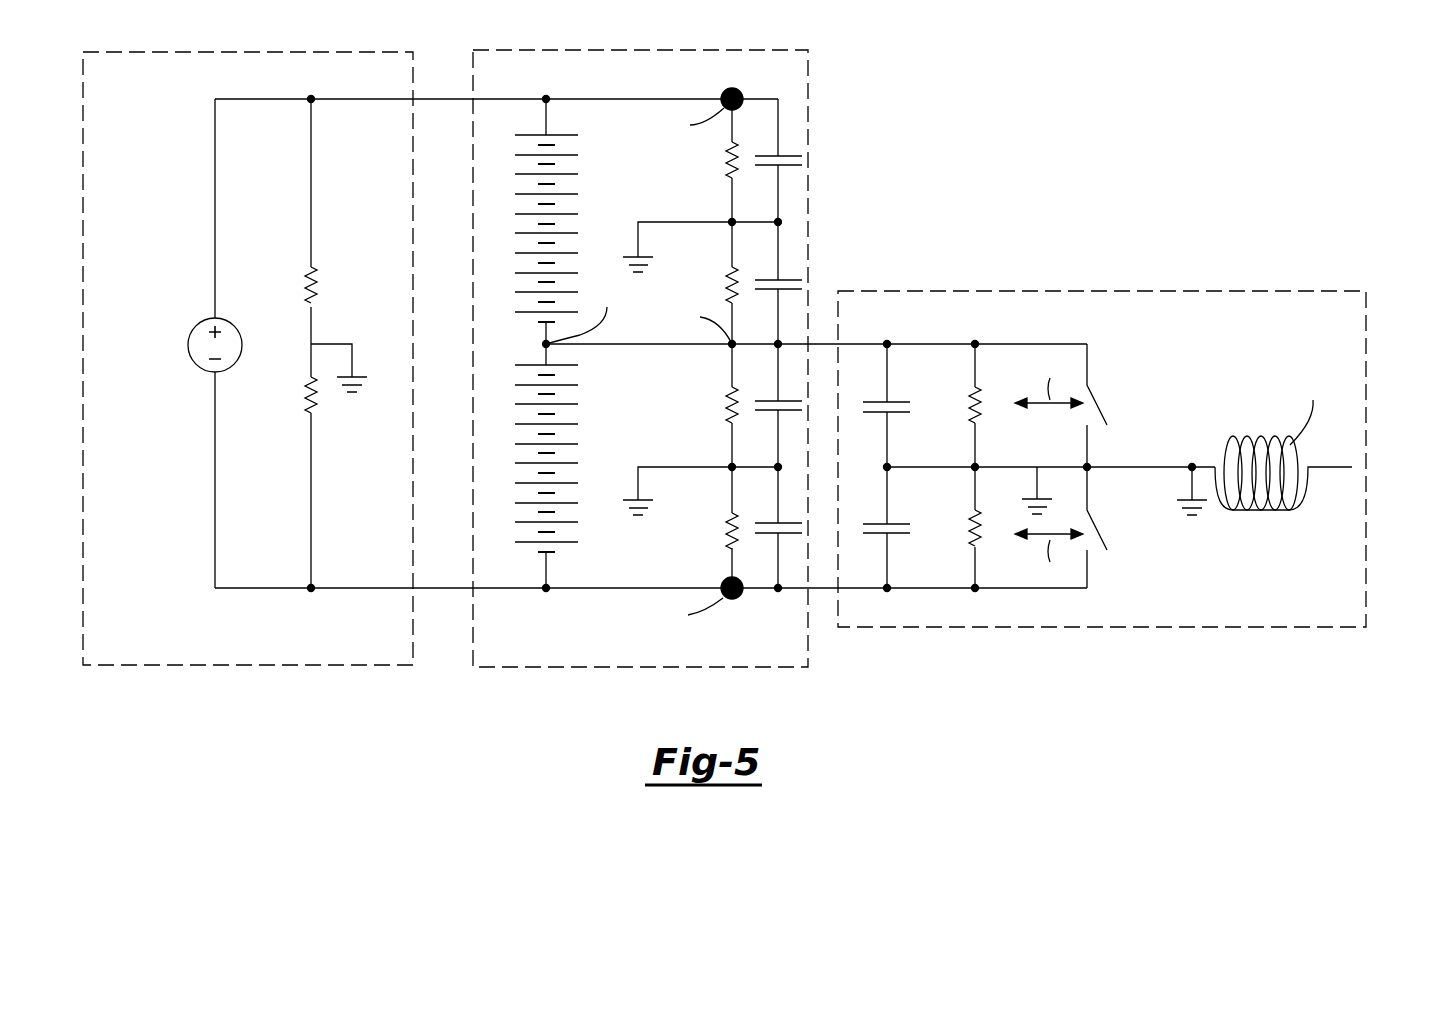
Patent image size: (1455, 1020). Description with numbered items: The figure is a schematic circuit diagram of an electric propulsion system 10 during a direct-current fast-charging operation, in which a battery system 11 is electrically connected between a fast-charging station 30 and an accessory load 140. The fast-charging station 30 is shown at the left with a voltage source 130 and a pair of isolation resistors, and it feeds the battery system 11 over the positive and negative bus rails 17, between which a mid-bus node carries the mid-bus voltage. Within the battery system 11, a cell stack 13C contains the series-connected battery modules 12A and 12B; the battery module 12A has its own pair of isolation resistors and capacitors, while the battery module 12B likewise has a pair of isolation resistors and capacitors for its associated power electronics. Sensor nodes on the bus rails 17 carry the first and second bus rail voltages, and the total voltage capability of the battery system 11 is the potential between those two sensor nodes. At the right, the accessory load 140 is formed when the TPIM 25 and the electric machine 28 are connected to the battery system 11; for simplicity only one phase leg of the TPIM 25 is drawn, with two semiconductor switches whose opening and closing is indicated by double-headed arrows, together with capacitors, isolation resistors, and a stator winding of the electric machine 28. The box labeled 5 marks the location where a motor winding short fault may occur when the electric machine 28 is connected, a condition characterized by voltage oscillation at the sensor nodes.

The electrical system 10 is at (1122, 58).
The battery system 11 is at (808, 153).
The battery module 12A is at (563, 186).
The battery module 12B is at (563, 416).
The cell stack 13C is at (498, 250).
The DC bus rails 17 is at (440, 99).
The TPIM 25 is at (1130, 340).
The electric machine 28 is at (1258, 540).
The DCFC station 30 is at (223, 665).
The DC voltage source 130 is at (188, 345).
The accessory load 140 is at (1366, 530).
The box [5] / condition 5 is at (1189, 455).